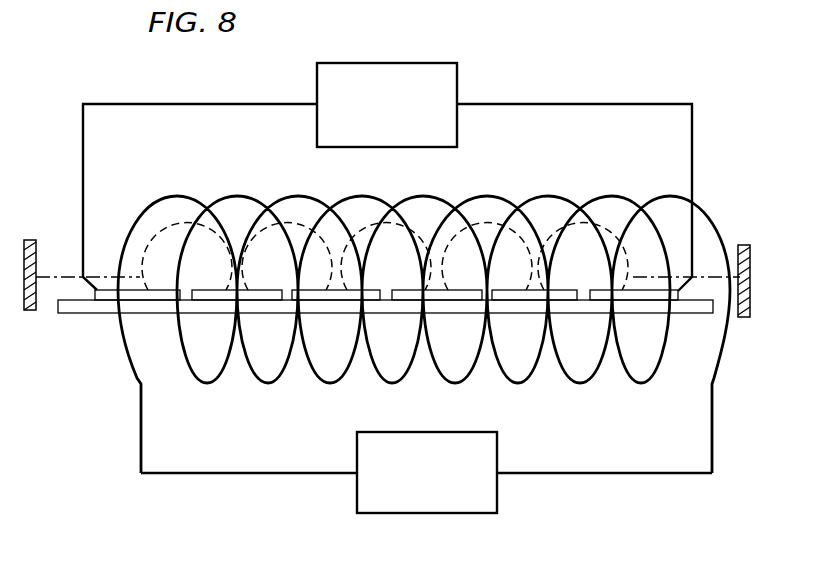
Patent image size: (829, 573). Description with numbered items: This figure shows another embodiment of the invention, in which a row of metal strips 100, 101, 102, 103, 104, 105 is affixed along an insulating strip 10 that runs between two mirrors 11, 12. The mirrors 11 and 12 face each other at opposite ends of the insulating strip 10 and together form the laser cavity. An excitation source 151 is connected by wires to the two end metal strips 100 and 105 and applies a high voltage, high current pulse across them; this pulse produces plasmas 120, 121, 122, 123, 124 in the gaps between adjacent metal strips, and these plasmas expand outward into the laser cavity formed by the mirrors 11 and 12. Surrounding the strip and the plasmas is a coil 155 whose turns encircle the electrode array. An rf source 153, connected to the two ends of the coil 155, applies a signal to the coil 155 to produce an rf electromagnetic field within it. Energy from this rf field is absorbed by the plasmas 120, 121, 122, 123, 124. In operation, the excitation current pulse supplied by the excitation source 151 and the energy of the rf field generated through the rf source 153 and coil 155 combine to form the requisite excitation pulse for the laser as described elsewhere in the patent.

The insulating strip 10 is at (700, 314).
The mirror 11 is at (32, 239).
The mirror 12 is at (745, 244).
The metal strip 100 is at (102, 297).
The metal strip 101 is at (222, 297).
The metal strip 102 is at (337, 297).
The metal strip 103 is at (460, 297).
The metal strip 104 is at (563, 298).
The metal strip 105 is at (648, 298).
The plasma 120 is at (224, 256).
The plasma 121 is at (294, 244).
The plasma 122 is at (358, 246).
The plasma 123 is at (488, 244).
The plasma 124 is at (606, 244).
The excitation source 151 is at (457, 70).
The rf source 153 is at (497, 503).
The coil 155 is at (147, 217).